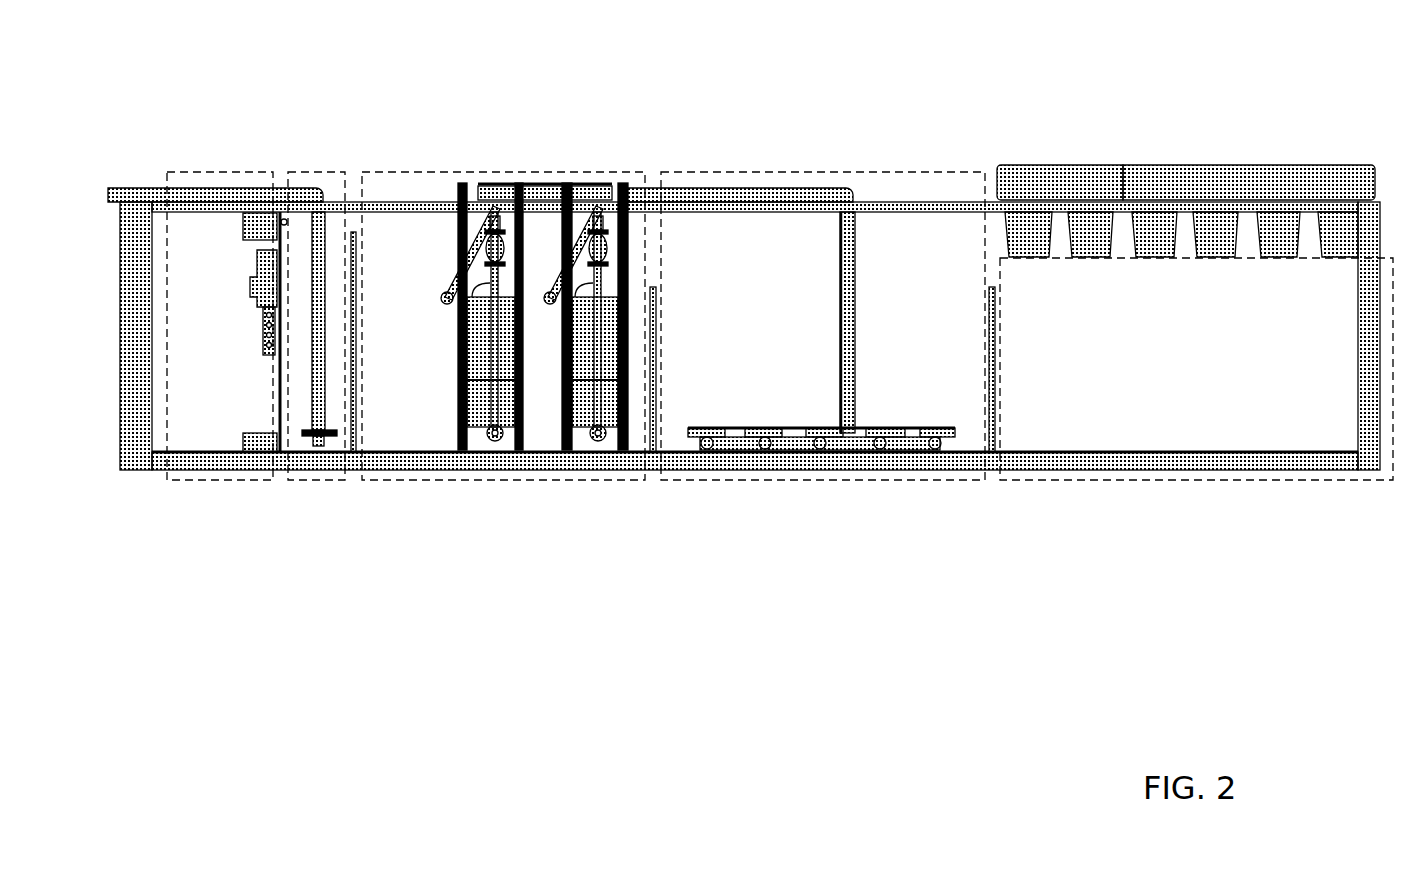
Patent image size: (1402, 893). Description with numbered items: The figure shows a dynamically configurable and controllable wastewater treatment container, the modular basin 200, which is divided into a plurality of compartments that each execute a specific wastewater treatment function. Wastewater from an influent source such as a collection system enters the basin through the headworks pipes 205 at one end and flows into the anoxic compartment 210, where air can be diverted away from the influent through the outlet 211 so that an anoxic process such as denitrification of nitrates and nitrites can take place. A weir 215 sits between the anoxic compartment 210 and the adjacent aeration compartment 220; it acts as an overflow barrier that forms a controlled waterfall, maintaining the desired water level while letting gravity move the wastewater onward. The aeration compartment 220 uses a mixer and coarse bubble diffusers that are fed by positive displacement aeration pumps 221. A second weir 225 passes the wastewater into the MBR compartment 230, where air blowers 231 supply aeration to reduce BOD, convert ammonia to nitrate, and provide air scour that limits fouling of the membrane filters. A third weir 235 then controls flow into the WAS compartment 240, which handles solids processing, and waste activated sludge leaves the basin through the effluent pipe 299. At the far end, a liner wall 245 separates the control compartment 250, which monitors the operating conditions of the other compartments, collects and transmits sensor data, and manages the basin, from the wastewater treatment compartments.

The modular basin 200 is at (1319, 65).
The headworks pipes 205 is at (1171, 165).
The anoxic compartment 210 is at (1123, 482).
The outlet 211 is at (1041, 165).
The weir 215 is at (992, 470).
The aeration compartment 220 is at (797, 173).
The positive displacement aeration pumps 221 is at (822, 450).
The weir 225 is at (653, 470).
The MBR compartment 230 is at (541, 173).
The air blowers 231 is at (529, 375).
The weir 235 is at (353, 470).
The WAS compartment 240 is at (312, 183).
The liner wall 245 is at (280, 470).
The control compartment 250 is at (223, 271).
The effluent pipe 299 is at (117, 187).